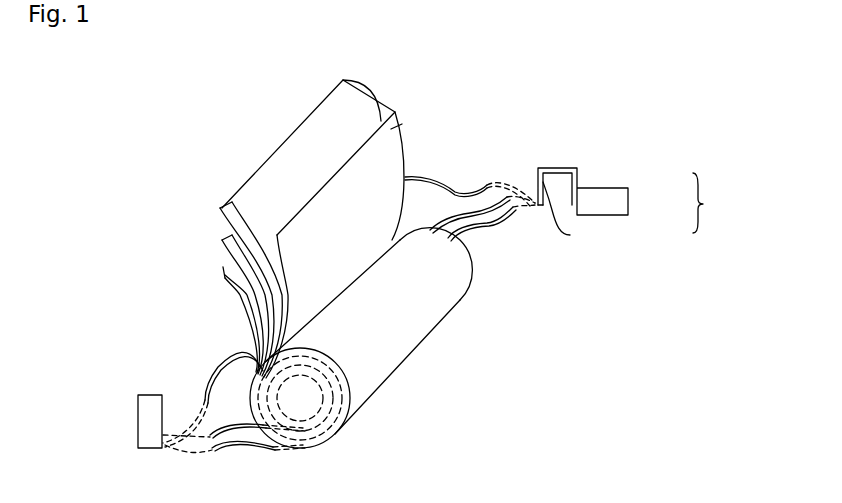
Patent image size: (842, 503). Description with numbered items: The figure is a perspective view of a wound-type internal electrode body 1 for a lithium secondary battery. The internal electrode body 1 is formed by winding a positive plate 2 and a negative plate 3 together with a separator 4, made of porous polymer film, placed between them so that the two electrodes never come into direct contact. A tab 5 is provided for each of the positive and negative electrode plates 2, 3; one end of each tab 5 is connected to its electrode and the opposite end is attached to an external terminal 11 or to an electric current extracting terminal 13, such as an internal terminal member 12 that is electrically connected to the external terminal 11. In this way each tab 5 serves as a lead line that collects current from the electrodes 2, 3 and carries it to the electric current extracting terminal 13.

The internal electrode body 1 is at (423, 348).
The positive plate 2 is at (225, 273).
The negative plate 3 is at (290, 157).
The separator 4 is at (402, 124).
The tab 5 is at (212, 372).
The external terminal 11 is at (153, 410).
The internal terminal member 12 is at (570, 235).
The electric current extracting terminal 13 is at (718, 203).